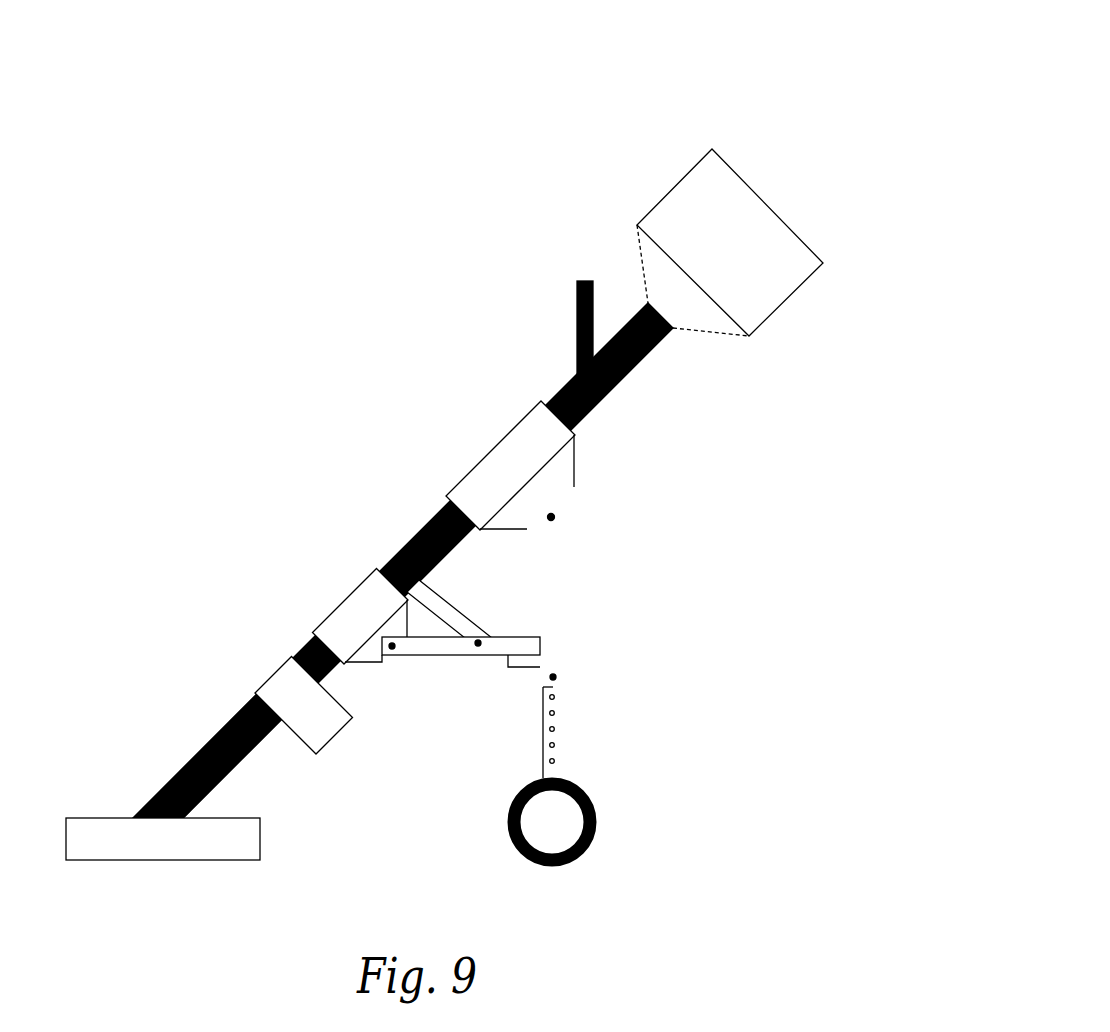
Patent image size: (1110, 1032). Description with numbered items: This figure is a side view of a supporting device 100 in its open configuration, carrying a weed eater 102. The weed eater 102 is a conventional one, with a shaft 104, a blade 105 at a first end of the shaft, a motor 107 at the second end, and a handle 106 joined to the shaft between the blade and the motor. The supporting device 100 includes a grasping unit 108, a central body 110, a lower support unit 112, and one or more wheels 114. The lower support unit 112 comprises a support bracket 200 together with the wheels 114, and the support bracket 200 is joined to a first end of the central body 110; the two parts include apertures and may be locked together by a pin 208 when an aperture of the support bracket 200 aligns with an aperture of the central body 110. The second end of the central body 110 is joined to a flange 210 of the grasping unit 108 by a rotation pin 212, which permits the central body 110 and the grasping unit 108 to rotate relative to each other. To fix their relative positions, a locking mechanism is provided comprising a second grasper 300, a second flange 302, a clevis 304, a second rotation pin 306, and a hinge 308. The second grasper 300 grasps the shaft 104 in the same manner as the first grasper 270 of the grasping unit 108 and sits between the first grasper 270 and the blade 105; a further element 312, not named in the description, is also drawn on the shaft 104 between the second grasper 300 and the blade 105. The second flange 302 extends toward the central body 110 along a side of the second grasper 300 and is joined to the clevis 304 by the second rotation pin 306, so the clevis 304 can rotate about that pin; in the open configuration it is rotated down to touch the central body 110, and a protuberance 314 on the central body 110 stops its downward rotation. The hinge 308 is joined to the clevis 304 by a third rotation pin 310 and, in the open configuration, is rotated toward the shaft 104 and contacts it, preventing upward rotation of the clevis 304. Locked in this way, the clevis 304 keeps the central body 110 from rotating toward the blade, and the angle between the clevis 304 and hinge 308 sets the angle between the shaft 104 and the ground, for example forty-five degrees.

The supporting device 100 is at (742, 523).
The weed eater 102 is at (730, 175).
The shaft 104 is at (220, 733).
The blade 105 is at (160, 840).
The handle 106 is at (589, 281).
The motor 107 is at (697, 218).
The grasping unit 108 is at (468, 439).
The central body 110 is at (480, 695).
The lower support unit 112 is at (646, 767).
The wheels 114 is at (597, 835).
The support bracket 200 is at (560, 738).
The pin 208 is at (553, 677).
The flange 210 is at (552, 473).
The rotation pin 212 is at (551, 517).
The first grasper 270 is at (532, 425).
The second grasper 300 is at (342, 603).
The second flange 302 is at (382, 658).
The clevis 304 is at (453, 645).
The second rotation pin 306 is at (392, 646).
The hinge 308 is at (452, 608).
The third rotation pin 310 is at (478, 643).
The lower collar 312 is at (278, 677).
The protuberance 314 is at (515, 668).